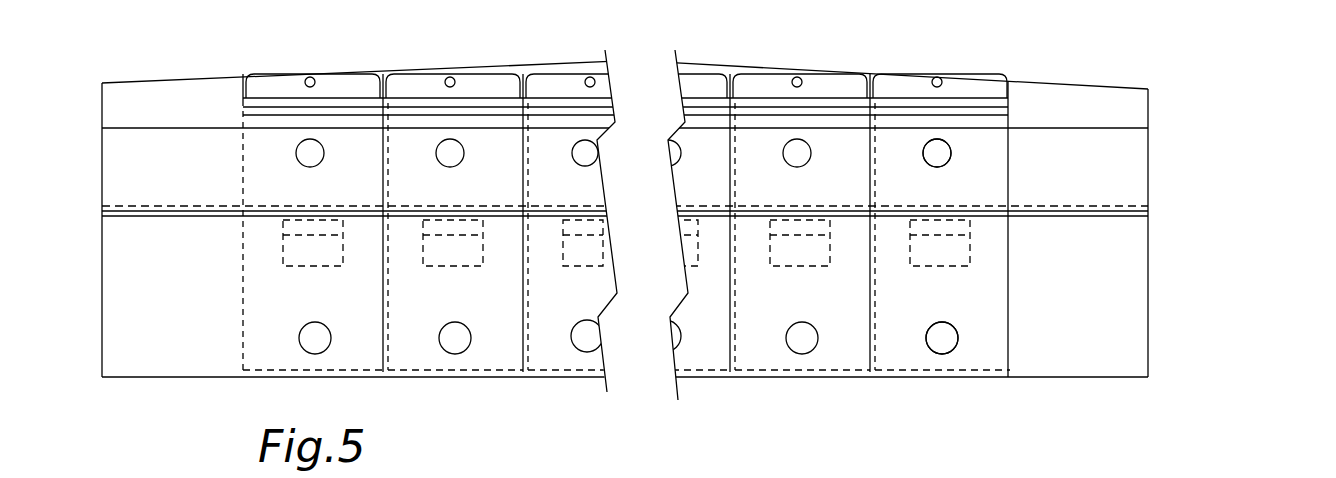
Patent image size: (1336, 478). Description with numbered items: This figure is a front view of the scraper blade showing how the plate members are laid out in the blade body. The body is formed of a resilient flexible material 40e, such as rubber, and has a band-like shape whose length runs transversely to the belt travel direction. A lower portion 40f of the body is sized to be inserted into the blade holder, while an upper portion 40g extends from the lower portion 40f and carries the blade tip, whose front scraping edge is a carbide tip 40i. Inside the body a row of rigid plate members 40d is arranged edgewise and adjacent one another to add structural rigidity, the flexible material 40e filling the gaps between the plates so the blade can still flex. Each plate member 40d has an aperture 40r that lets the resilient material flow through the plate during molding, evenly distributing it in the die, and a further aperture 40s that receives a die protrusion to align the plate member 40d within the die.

The aperture 40r is at (955, 149).
The upper portion 40g is at (1185, 120).
The lower portion 40f is at (1180, 266).
The rigid plate member 40d is at (1012, 305).
The flexible material 40e is at (137, 342).
The aperture 40s is at (932, 354).
The carbide tip 40i is at (1275, 471).